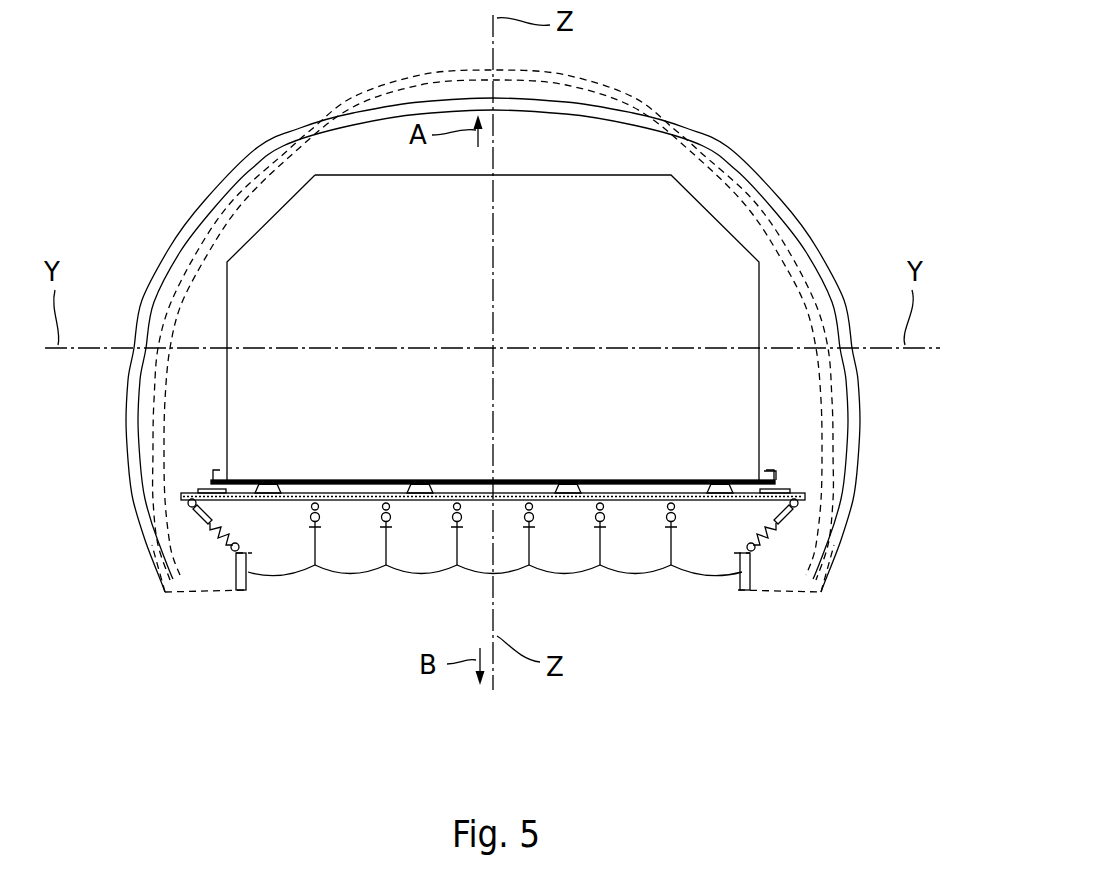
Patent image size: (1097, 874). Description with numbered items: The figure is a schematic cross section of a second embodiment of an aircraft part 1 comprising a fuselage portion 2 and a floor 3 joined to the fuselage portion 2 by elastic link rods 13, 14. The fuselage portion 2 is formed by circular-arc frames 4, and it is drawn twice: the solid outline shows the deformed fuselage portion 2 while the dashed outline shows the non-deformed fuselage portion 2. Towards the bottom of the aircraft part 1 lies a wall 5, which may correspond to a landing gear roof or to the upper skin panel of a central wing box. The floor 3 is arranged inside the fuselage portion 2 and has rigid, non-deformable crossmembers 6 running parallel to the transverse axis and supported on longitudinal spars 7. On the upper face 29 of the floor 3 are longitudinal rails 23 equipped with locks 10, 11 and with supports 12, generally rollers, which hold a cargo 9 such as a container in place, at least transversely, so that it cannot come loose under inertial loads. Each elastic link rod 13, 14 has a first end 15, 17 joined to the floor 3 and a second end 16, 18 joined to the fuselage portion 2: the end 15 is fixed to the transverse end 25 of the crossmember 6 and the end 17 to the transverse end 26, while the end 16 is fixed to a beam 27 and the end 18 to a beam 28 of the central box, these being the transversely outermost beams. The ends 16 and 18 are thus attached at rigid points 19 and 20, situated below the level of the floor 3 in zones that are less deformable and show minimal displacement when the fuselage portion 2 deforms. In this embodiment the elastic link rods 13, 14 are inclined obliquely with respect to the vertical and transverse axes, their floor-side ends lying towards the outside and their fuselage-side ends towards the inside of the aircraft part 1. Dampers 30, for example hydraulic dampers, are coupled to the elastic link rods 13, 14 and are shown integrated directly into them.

The aircraft part 1 is at (908, 151).
The fuselage portion 2 is at (881, 249).
The floor 3 is at (805, 475).
The frames 4 is at (808, 238).
The wall 5 is at (380, 592).
The crossmembers 6 is at (616, 512).
The spars 7 is at (308, 550).
The cargo 9 is at (710, 213).
The lock 10 is at (780, 478).
The lock 11 is at (207, 485).
The supports 12 is at (717, 482).
The elastic link rod 13 is at (782, 566).
The elastic link rod 14 is at (213, 562).
The first end 15 is at (800, 506).
The second end 16 is at (825, 590).
The first end 17 is at (188, 503).
The second end 18 is at (232, 556).
The rigid point 19 is at (780, 582).
The rigid point 20 is at (196, 592).
The rails 23 is at (192, 494).
The transverse end 25 is at (815, 490).
The transverse end 26 is at (165, 487).
The beam 27 is at (763, 591).
The beam 28 is at (233, 591).
The upper face 29 is at (630, 472).
The dampers 30 is at (189, 531).